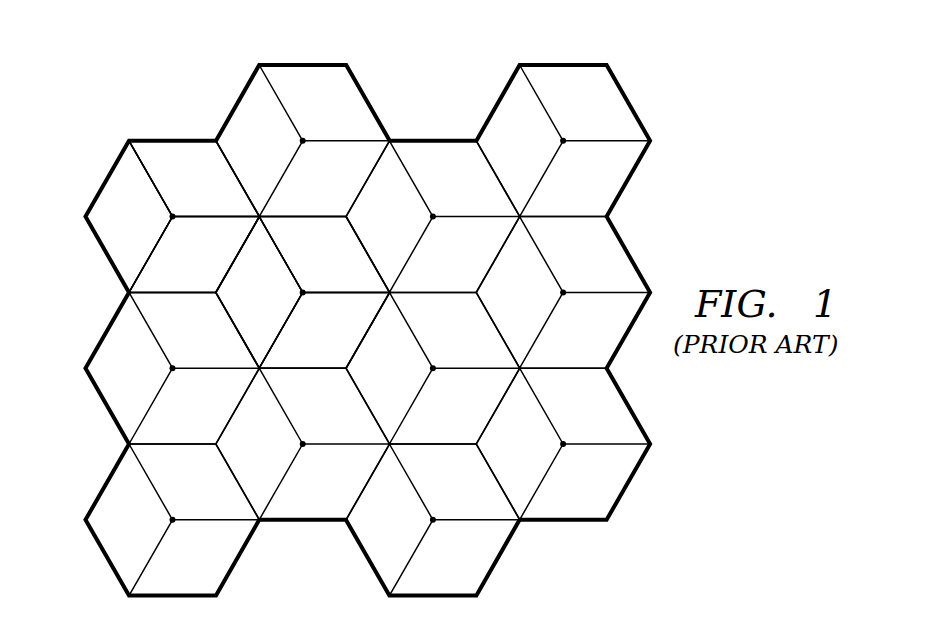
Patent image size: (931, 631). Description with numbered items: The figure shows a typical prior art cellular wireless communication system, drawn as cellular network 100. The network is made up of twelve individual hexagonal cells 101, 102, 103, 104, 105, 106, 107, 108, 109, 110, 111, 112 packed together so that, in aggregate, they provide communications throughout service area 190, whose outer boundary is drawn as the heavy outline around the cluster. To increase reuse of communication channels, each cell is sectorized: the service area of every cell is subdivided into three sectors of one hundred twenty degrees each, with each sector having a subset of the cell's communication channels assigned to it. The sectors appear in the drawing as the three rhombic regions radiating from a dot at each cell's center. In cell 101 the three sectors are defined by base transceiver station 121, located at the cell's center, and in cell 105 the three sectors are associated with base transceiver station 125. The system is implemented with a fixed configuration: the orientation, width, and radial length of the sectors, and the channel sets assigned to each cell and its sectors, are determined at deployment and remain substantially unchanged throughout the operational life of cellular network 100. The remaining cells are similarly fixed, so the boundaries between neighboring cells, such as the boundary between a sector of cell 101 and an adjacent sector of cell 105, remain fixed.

The cellular network 100 is at (410, 306).
The cell 101 is at (103, 258).
The cell 102 is at (108, 410).
The cell 103 is at (108, 560).
The cell 104 is at (302, 64).
The cell 105 is at (302, 214).
The cell 106 is at (302, 370).
The cell 107 is at (432, 139).
The cell 108 is at (433, 290).
The cell 109 is at (433, 443).
The cell 110 is at (562, 64).
The cell 111 is at (563, 214).
The cell 112 is at (563, 366).
The base transceiver station 121 is at (173, 213).
The base transceiver station 125 is at (303, 289).
The service area 190 is at (367, 558).